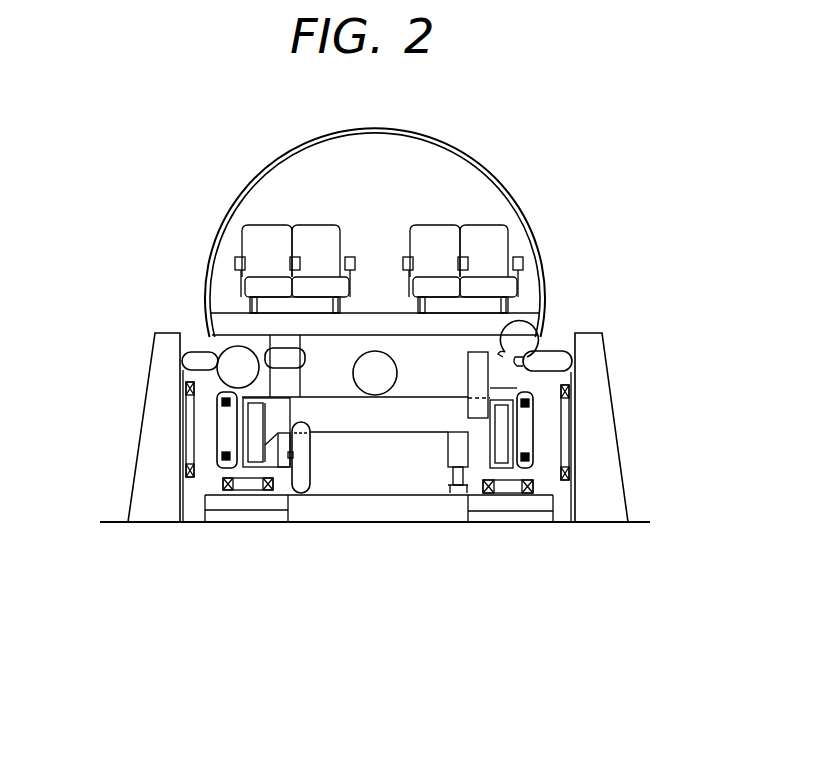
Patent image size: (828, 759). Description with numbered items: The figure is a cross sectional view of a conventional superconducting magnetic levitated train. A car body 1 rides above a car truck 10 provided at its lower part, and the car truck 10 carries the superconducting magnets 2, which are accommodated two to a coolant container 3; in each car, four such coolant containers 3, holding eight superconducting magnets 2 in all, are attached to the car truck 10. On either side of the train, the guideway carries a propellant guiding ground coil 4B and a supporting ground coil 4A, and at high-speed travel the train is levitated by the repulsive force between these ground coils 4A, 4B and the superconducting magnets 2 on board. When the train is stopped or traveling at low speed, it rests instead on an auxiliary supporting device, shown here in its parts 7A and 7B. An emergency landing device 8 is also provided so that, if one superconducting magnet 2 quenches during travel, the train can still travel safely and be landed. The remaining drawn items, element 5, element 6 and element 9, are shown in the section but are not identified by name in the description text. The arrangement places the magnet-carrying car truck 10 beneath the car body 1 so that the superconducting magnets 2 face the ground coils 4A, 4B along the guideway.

The car body 1 is at (486, 170).
The superconducting magnet 2 is at (528, 452).
The coolant container 3 is at (528, 417).
The supporting ground coil 4A is at (513, 493).
The propellant guiding ground coil 4B is at (190, 478).
The guide wheel 5 is at (533, 358).
The air duct 6 is at (387, 378).
The support member 7A is at (300, 492).
The support arm 7B is at (552, 360).
The emergency landing device 8 is at (457, 487).
The guideway side wall 9 is at (603, 515).
The car truck 10 is at (382, 427).